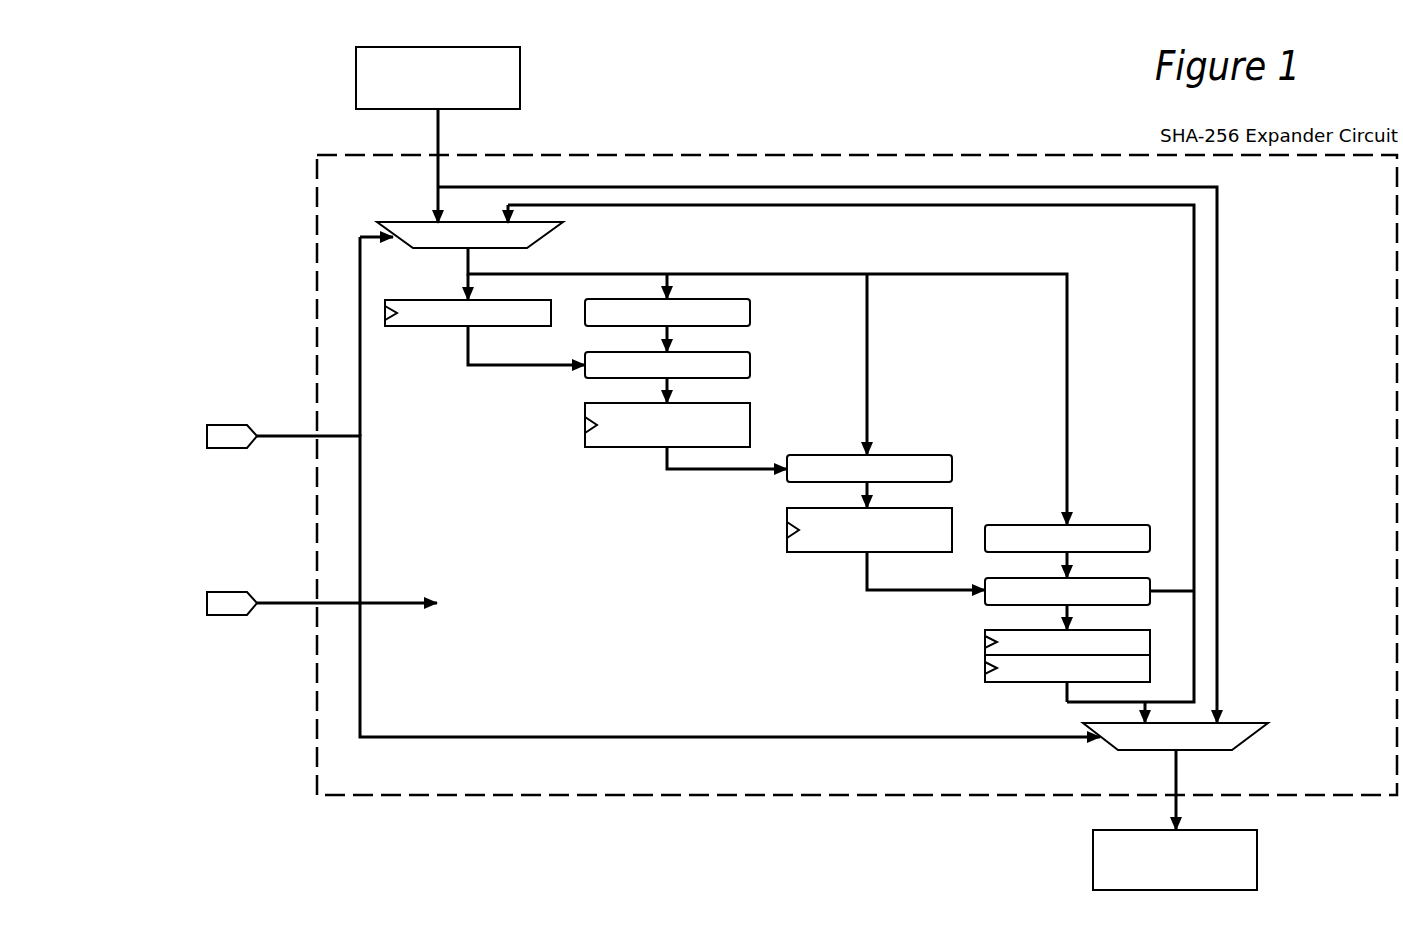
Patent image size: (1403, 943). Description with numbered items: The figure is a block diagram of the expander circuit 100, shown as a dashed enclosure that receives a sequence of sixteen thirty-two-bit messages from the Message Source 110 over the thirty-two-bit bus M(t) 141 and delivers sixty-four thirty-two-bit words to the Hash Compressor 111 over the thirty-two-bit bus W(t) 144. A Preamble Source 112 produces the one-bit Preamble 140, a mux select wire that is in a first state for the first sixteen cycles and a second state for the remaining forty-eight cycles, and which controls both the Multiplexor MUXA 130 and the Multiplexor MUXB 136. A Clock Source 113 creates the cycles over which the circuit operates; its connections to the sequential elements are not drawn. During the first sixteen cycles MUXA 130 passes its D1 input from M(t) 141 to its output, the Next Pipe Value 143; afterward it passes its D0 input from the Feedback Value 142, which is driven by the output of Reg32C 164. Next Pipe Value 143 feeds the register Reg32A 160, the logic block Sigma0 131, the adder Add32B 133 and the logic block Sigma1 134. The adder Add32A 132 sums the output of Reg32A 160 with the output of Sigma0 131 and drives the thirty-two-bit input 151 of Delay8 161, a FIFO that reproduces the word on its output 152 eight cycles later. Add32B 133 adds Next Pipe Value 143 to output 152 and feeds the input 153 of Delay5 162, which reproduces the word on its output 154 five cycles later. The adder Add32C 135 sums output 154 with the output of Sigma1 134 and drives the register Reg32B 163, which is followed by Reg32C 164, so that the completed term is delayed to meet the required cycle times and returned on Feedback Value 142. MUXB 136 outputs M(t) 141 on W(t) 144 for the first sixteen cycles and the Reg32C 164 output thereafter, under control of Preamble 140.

The SHA-256 Expander Circuit 100 is at (316, 213).
The Message Source 110 is at (530, 78).
The Hash Compressor 111 is at (1093, 862).
The Preamble Source 112 is at (230, 455).
The Clock Source 113 is at (230, 625).
The Multiplexor MUXA 130 is at (545, 222).
The Sigma0 131 is at (758, 294).
The Add32A 132 is at (760, 366).
The Add32B 133 is at (955, 470).
The Sigma1 134 is at (1152, 532).
The Add32C 135 is at (1155, 591).
The Multiplexor MUXB 136 is at (1268, 740).
The Preamble 140 is at (357, 405).
The M(t) bus 141 is at (902, 188).
The Feedback Value 142 is at (1005, 205).
The Next Pipe Value 143 is at (935, 273).
The W(t) bus 144 is at (1180, 808).
The 32-bit input of Delay8 151 is at (597, 389).
The 32-bit output of Delay8 152 is at (693, 477).
The 32-bit input of Delay5 153 is at (792, 490).
The 32-bit output of Delay5 154 is at (867, 600).
The Reg32A 160 is at (390, 293).
The Delay8 161 is at (617, 449).
The Delay5 162 is at (810, 555).
The Reg32B 163 is at (982, 658).
The Reg32C 164 is at (1005, 688).